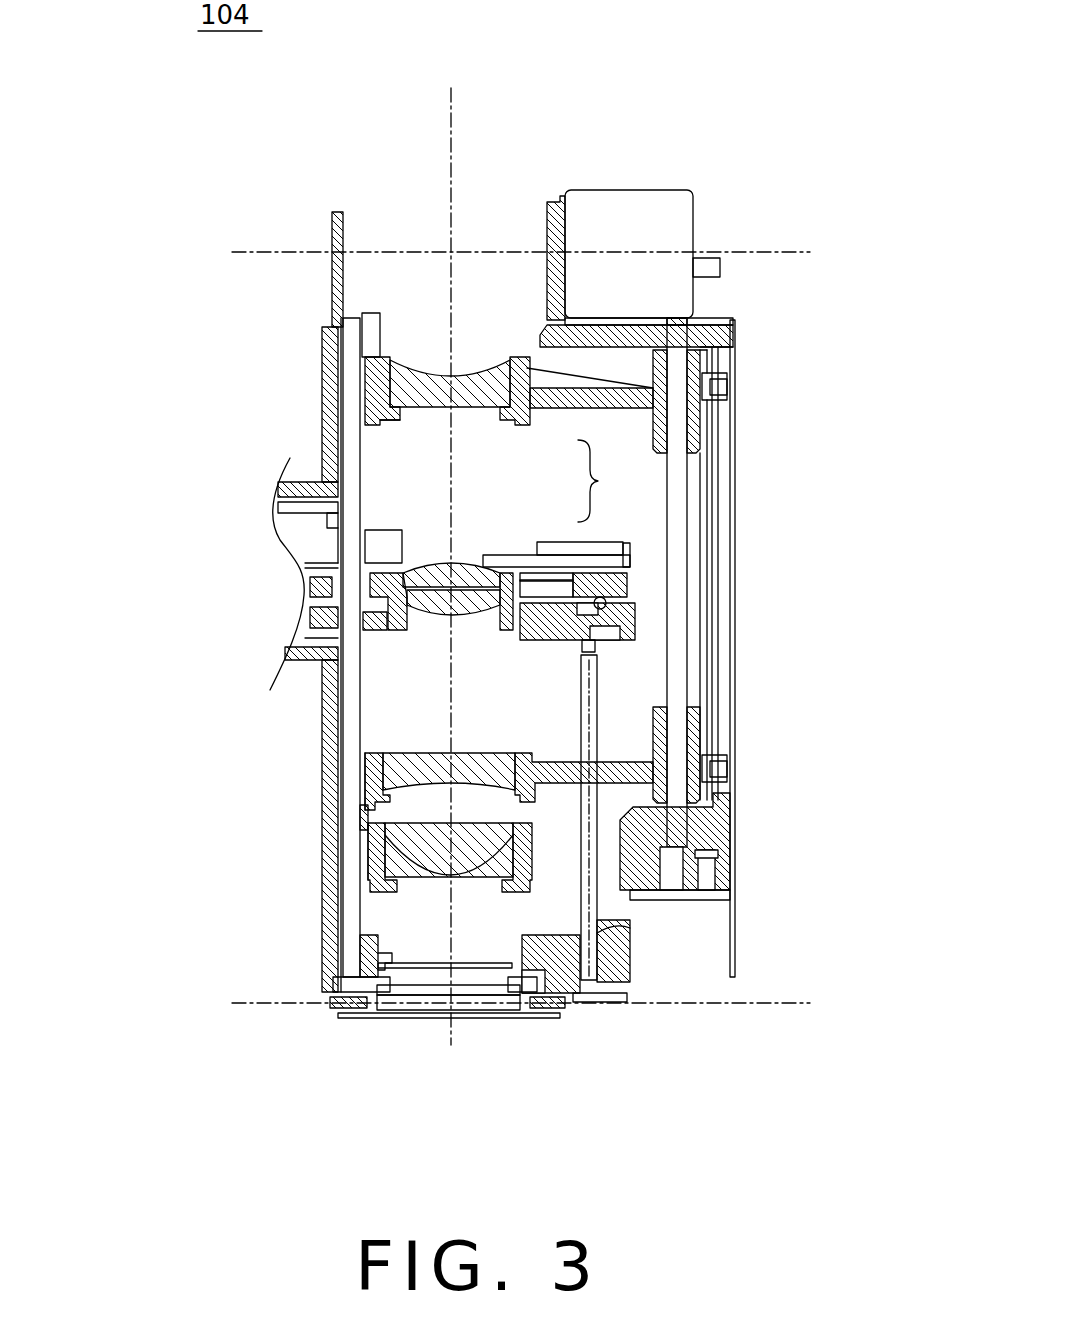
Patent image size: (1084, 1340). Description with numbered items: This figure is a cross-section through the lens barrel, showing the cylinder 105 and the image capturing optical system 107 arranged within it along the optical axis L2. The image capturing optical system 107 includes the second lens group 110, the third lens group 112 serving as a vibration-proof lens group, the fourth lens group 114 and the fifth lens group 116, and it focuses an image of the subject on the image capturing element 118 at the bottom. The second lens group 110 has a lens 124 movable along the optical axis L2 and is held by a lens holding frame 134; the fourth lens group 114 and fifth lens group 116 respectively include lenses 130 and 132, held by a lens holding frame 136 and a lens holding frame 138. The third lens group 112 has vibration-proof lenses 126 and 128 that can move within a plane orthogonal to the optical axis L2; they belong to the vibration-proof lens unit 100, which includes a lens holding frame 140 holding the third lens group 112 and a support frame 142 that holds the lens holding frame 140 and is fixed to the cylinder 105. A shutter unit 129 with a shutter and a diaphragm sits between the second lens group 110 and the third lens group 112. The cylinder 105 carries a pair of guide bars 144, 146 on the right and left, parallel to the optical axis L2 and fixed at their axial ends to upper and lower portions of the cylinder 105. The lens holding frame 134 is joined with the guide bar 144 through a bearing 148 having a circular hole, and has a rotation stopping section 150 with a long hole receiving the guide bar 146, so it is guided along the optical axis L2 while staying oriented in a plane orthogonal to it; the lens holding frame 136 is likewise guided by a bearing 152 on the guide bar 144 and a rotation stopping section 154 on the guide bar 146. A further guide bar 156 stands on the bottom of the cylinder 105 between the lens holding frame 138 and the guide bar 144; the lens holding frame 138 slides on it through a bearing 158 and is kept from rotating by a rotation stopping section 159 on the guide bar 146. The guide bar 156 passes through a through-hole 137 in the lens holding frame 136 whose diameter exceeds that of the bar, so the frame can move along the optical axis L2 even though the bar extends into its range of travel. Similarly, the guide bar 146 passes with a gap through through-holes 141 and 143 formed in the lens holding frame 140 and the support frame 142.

The vibration-proof lens unit 100 is at (650, 593).
The cylinder 105 is at (332, 268).
The image capturing optical system 107 is at (480, 350).
The second lens group 110 is at (450, 383).
The third lens group 112 is at (615, 481).
The fourth lens group 114 is at (449, 771).
The fifth lens group 116 is at (449, 850).
The image capturing element 118 is at (470, 1018).
The lens 124 is at (375, 388).
The vibration-proof lens 126 is at (445, 568).
The vibration-proof lens 128 is at (465, 603).
The shutter unit 129 is at (612, 540).
The lens 130 is at (415, 753).
The lens 132 is at (400, 845).
The lens holding frame 134 is at (408, 410).
The lens holding frame 136 is at (366, 790).
The through-hole 137 is at (600, 768).
The lens holding frame 138 is at (368, 882).
The lens holding frame 140 is at (630, 577).
The through-hole 141 is at (305, 567).
The support frame 142 is at (635, 630).
The through-hole 143 is at (320, 617).
The guide bar 144 is at (678, 662).
The guide bar 146 is at (352, 683).
The bearing 148 is at (702, 362).
The rotation stopping section 150 is at (380, 357).
The bearing 152 is at (700, 735).
The rotation stopping section 154 is at (370, 818).
The guide bar 156 is at (630, 928).
The bearing 158 is at (712, 862).
The rotation stopping section 159 is at (362, 940).
The optical axis L2 is at (447, 183).